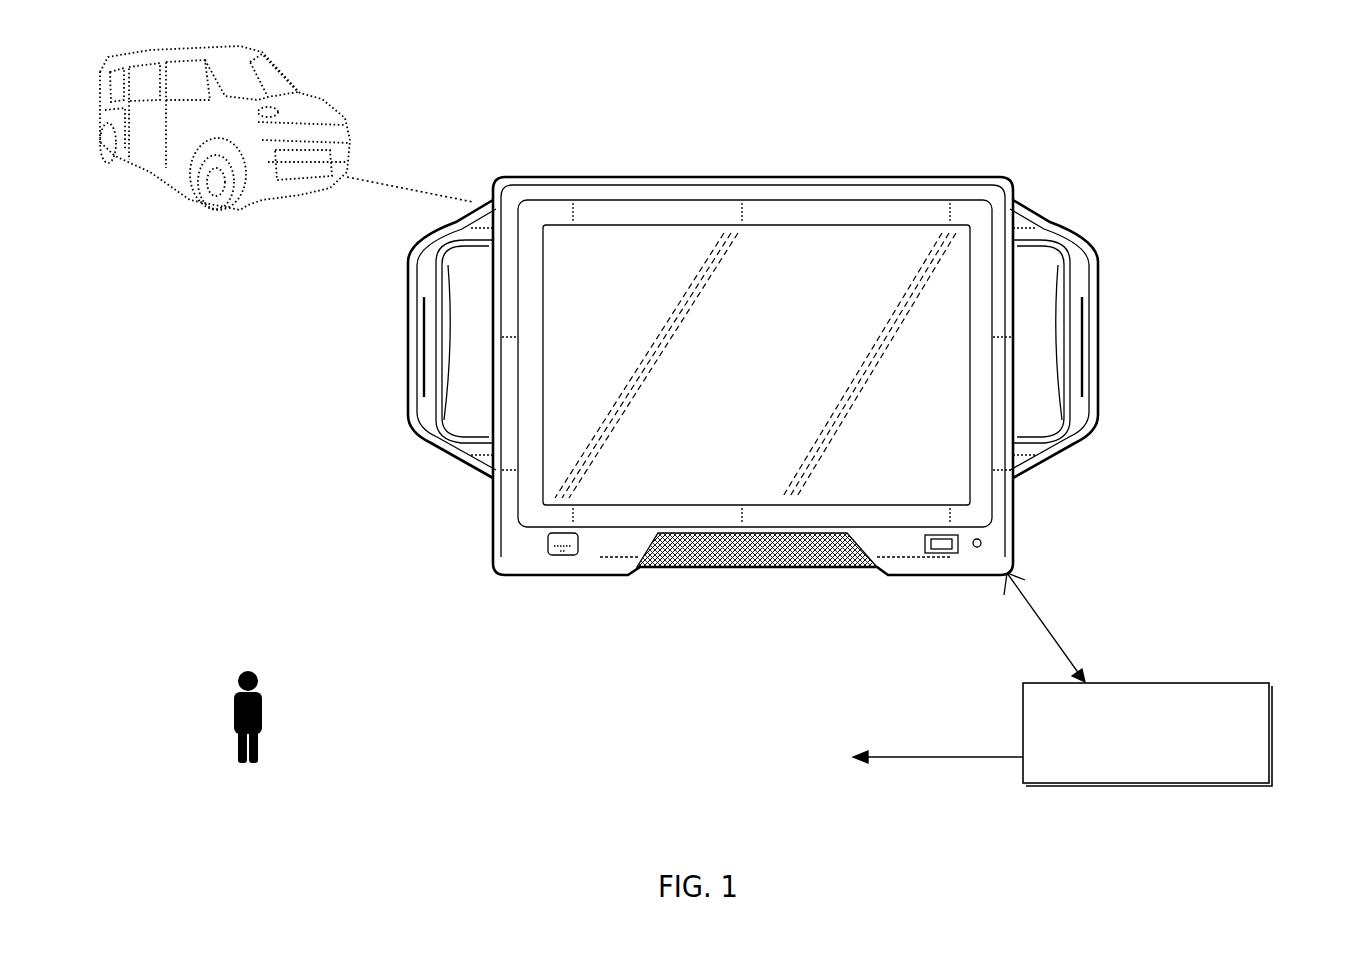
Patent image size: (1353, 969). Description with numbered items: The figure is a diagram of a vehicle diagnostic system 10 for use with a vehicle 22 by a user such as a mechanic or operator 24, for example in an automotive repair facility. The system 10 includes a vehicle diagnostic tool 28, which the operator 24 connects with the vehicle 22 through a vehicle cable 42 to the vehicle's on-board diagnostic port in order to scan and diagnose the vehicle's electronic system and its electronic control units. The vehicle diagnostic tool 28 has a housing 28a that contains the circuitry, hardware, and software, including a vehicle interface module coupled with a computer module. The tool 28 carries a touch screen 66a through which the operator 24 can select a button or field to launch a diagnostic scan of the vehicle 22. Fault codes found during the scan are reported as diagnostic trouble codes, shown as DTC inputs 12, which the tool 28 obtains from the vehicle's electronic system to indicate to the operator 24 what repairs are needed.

The vehicle diagnostic system 10 is at (655, 327).
The DTC inputs 12 is at (1270, 752).
The vehicle 22 is at (313, 102).
The operator 24 is at (262, 704).
The vehicle diagnostic tool 28 is at (838, 212).
The housing 28a is at (635, 178).
The vehicle cable 42 is at (398, 190).
The touch screen 66a is at (873, 287).